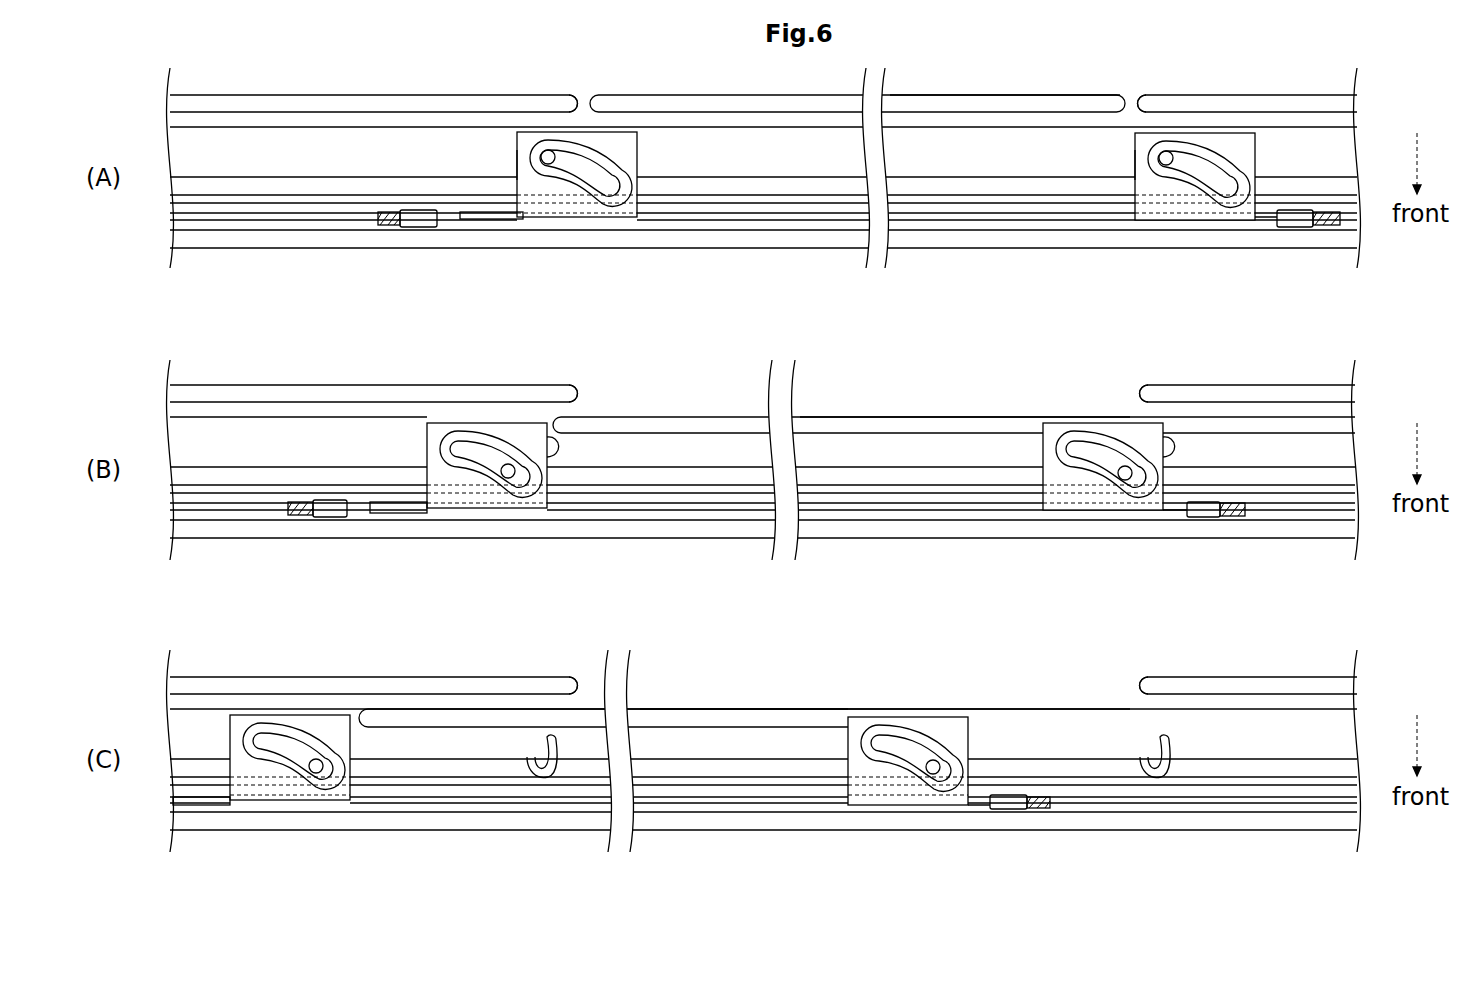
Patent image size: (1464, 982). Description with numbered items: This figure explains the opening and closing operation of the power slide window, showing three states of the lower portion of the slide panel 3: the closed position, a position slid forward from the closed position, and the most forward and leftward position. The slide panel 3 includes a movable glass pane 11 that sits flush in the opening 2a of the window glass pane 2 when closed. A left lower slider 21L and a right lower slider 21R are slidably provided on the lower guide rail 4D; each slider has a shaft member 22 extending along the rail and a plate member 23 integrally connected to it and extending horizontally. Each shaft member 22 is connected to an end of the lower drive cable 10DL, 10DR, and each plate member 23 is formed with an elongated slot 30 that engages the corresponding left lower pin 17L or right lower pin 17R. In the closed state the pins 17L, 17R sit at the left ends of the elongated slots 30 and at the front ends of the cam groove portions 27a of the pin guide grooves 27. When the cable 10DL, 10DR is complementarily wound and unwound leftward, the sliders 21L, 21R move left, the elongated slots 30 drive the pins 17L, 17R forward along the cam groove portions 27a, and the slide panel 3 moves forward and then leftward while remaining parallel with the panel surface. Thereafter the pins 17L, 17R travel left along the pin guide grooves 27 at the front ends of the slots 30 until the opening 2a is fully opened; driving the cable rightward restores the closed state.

The window glass pane 2 is at (234, 98).
The opening 2a is at (582, 96).
The slide panel 3 is at (1003, 92).
The lower guide rail 4D is at (1362, 160).
The left lower drive cable 10DL is at (287, 217).
The right lower drive cable 10DR is at (1315, 228).
The movable glass pane 11 is at (930, 97).
The left lower pin 17L is at (550, 143).
The right lower pin 17R is at (1175, 155).
The left lower slider 21L is at (578, 296).
The right lower slider 21R is at (1230, 296).
The shaft member 22 is at (490, 230).
The plate member 23 is at (568, 219).
The pin guide groove 27 is at (740, 180).
The cam groove portion 27a is at (517, 163).
The elongated slot 30 is at (588, 150).